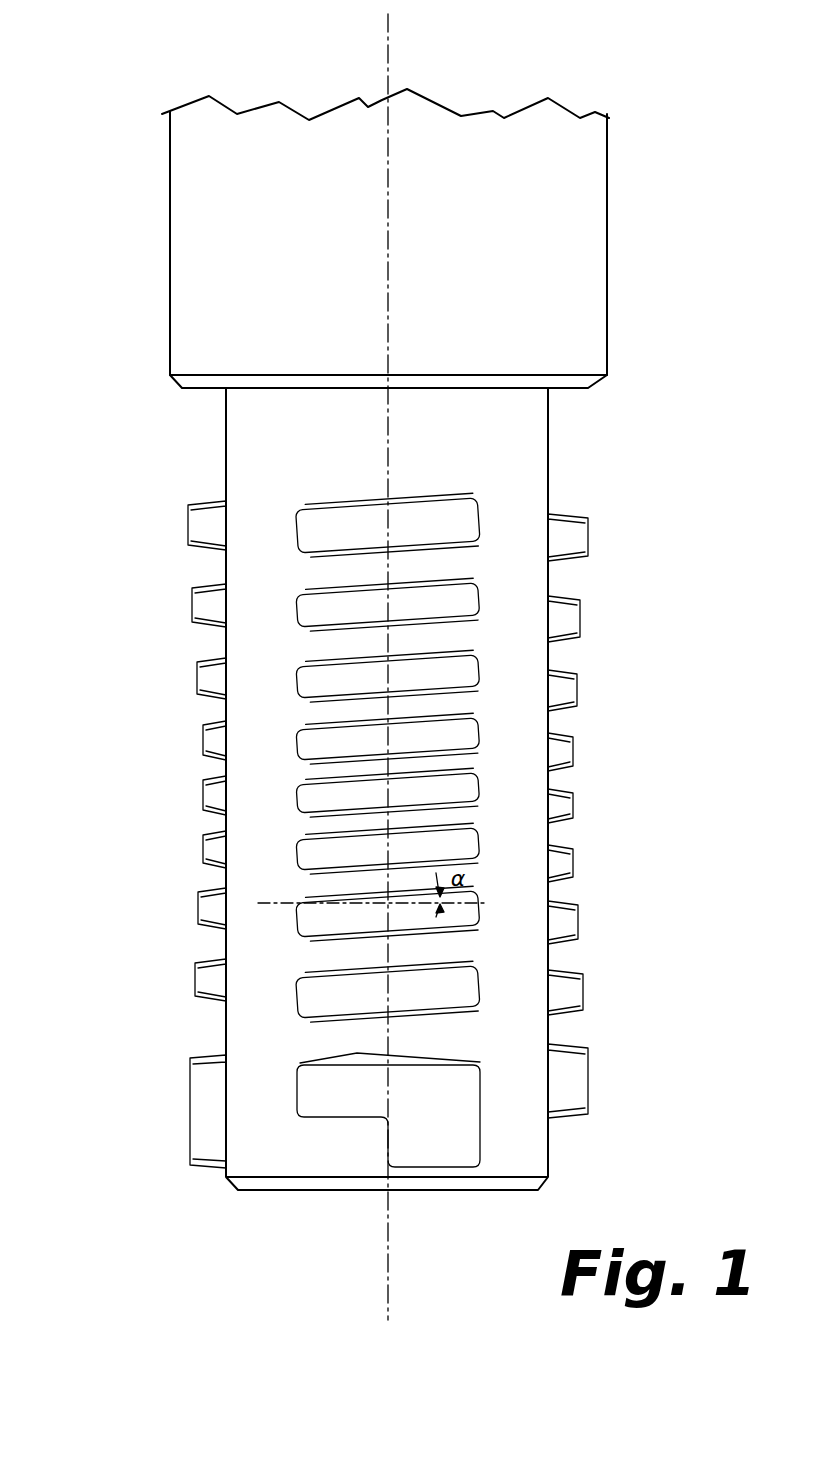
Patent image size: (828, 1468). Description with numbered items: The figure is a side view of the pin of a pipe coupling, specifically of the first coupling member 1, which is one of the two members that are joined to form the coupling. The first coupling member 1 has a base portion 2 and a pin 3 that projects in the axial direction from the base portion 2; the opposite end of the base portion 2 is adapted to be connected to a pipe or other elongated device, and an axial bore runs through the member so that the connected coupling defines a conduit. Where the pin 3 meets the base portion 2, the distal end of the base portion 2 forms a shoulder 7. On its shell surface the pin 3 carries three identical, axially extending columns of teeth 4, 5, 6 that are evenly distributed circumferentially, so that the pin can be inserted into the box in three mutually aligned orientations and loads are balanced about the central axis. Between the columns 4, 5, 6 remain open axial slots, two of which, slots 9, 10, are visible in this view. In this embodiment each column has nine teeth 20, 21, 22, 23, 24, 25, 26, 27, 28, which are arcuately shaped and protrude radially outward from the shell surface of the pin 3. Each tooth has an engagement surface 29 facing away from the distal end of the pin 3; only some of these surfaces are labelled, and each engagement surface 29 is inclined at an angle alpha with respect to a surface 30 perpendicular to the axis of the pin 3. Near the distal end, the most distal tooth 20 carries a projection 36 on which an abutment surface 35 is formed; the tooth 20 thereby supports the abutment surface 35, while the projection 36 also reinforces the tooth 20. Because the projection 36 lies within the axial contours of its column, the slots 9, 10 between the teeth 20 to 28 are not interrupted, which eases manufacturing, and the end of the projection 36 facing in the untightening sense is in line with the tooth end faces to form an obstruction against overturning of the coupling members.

The first coupling member 1 is at (636, 599).
The base portion 2 is at (608, 229).
The pin 3 is at (548, 460).
The column of teeth 4 is at (202, 503).
The column of teeth 5 is at (409, 500).
The column of teeth 6 is at (570, 516).
The shoulder 7 is at (582, 393).
The slot 9 is at (258, 502).
The slot 10 is at (508, 508).
The tooth 20 is at (480, 1120).
The tooth 21 is at (483, 972).
The tooth 22 is at (483, 896).
The tooth 23 is at (483, 840).
The tooth 24 is at (483, 779).
The tooth 25 is at (483, 720).
The tooth 26 is at (483, 660).
The tooth 27 is at (483, 592).
The tooth 28 is at (480, 530).
The engagement surface 29 is at (210, 955).
The surface perpendicular to the axis 30 is at (263, 900).
The abutment surface 35 is at (383, 1140).
The projection 36 is at (212, 1143).